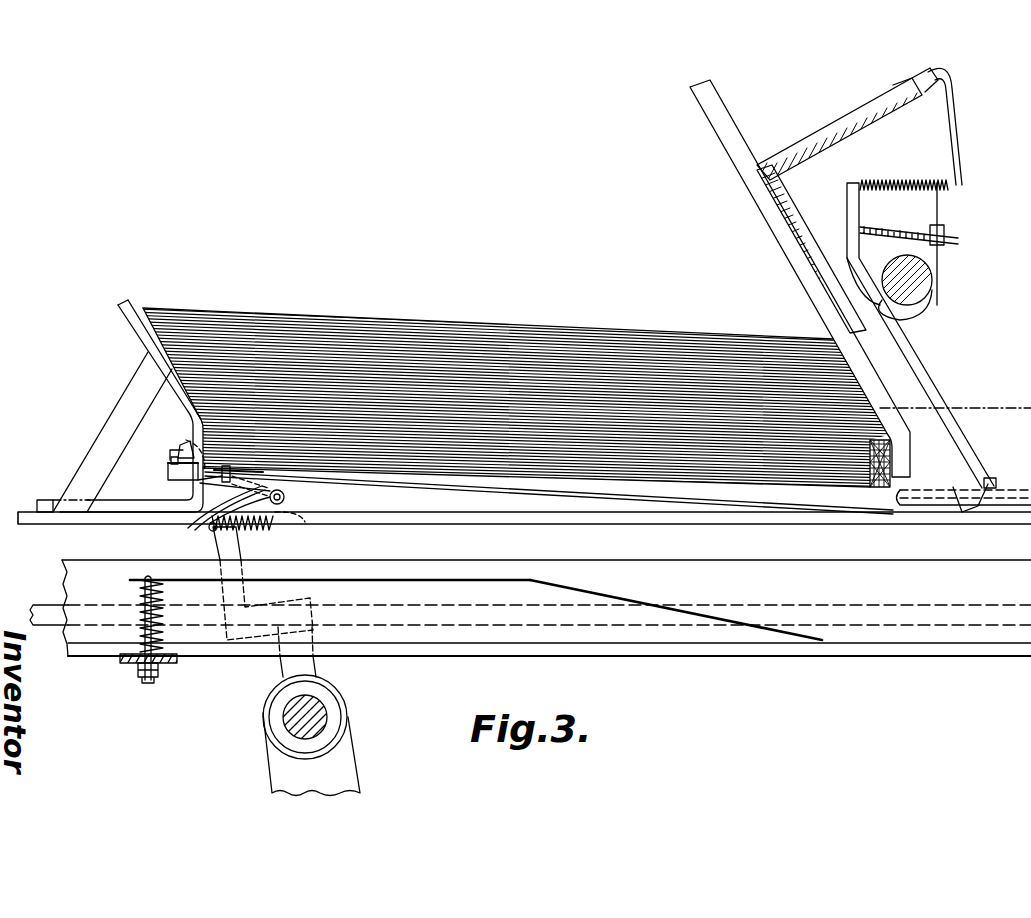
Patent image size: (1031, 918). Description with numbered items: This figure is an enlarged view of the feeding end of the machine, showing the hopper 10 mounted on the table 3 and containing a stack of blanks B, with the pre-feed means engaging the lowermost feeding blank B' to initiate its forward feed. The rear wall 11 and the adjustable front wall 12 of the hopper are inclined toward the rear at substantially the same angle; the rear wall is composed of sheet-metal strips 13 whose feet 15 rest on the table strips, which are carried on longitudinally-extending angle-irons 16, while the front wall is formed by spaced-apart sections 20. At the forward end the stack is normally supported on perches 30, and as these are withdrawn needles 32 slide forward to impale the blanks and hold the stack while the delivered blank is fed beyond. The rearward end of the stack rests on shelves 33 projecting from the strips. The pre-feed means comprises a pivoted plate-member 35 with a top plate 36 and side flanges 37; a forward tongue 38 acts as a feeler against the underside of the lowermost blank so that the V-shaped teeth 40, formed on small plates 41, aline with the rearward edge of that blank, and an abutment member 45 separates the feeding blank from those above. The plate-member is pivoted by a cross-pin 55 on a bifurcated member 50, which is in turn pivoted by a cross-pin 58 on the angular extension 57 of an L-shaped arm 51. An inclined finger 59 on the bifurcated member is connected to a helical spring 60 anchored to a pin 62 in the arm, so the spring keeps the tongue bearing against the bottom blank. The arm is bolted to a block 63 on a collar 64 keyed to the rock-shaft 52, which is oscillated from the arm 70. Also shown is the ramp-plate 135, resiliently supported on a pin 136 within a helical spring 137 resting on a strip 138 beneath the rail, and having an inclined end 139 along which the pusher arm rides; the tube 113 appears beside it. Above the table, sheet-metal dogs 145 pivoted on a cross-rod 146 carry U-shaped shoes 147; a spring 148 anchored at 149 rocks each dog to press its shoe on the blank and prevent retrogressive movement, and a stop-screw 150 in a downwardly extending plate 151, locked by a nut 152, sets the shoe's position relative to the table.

The table 3 is at (407, 525).
The hopper 10 is at (515, 270).
The rear wall 11 is at (149, 298).
The front wall 12 is at (728, 174).
The sheet-metal strips 13 is at (127, 322).
The feet 15 is at (48, 499).
The angle-irons 16 is at (494, 568).
The wall sections 20 is at (783, 243).
The perches 30 is at (930, 490).
The needles 32 is at (888, 487).
The shelves 33 is at (200, 484).
The plate-member 35 is at (163, 472).
The top plate 36 is at (171, 461).
The side flanges 37 is at (170, 478).
The tongue 38 is at (266, 473).
The teeth 40 is at (200, 448).
The plates 41 is at (168, 455).
The abutment member 45 is at (180, 446).
The bifurcated member 50 is at (273, 484).
The L-shaped arm 51 is at (236, 548).
The rock-shaft 52 is at (312, 716).
The cross-pin 55 is at (188, 528).
The angular extension 57 is at (213, 521).
The cross-pin 58 is at (285, 499).
The inclined finger 59 is at (303, 520).
The helical spring 60 is at (262, 528).
The pin 62 is at (212, 531).
The block 63 is at (282, 664).
The collar 64 is at (330, 697).
The arm 70 is at (340, 768).
The tube 113 is at (56, 612).
The plate 135 is at (390, 585).
The pin 136 is at (146, 681).
The helical spring 137 is at (140, 600).
The strip 138 is at (127, 667).
The inclined portion 139 is at (616, 597).
The dogs 145 is at (935, 390).
The cross-rod 146 is at (912, 283).
The shoes 147 is at (955, 487).
The spring 148 is at (912, 183).
The anchor 149 is at (950, 188).
The stop-screw 150 is at (955, 238).
The plate 151 is at (940, 213).
The nut 152 is at (942, 246).
The blanks B is at (355, 296).
The feeding blank B' is at (549, 493).